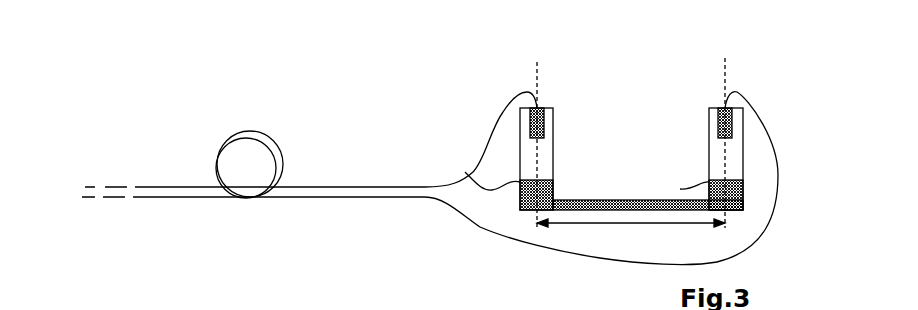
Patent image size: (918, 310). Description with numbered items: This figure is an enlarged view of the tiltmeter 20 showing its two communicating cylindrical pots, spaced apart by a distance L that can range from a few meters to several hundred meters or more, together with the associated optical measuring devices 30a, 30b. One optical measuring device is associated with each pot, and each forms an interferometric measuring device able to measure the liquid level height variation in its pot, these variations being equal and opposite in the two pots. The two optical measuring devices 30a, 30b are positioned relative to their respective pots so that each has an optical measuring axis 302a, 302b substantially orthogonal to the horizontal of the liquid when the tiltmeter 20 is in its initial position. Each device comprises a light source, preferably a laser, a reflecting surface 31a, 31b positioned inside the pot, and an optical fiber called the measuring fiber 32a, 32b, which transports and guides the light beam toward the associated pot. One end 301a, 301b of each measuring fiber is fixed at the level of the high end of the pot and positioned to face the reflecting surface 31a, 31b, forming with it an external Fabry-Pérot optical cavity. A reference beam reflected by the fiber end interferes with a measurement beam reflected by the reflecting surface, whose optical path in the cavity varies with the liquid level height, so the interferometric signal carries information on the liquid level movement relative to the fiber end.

The tiltmeter 20 is at (517, 222).
The first optical measuring device 30a is at (498, 118).
The second optical measuring device 30b is at (717, 106).
The first reflecting surface 31a is at (466, 173).
The second reflecting surface 31b is at (680, 189).
The first measuring fiber 32a is at (310, 187).
The second measuring fiber 32b is at (298, 199).
The end of first measuring fiber 301a is at (545, 138).
The end of second measuring fiber 301b is at (709, 137).
The first optical measuring axis 302a is at (537, 67).
The second optical measuring axis 302b is at (727, 68).